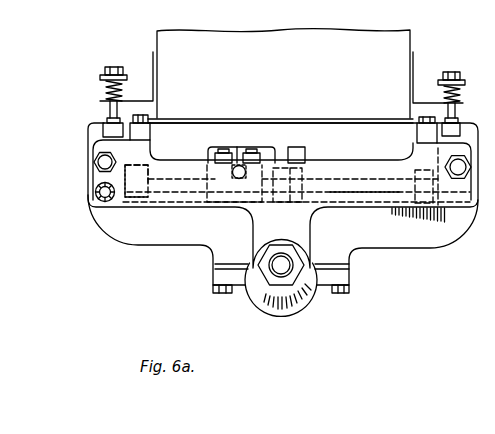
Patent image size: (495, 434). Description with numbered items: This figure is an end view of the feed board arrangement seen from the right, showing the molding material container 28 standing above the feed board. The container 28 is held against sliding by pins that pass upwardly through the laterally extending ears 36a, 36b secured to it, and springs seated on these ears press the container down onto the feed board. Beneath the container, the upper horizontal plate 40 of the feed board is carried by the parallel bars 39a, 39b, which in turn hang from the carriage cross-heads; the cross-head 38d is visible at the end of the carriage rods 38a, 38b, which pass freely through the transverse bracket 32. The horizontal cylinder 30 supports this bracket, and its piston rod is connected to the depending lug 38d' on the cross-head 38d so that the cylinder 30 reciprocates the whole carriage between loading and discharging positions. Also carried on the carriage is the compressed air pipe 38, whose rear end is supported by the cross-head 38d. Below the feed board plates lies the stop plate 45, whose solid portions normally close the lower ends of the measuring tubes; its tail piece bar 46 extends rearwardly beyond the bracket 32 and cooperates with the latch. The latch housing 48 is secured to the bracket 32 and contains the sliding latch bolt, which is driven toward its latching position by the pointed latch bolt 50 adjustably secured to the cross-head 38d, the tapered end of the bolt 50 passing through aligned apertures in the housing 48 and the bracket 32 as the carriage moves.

The container 28 is at (290, 35).
The horizontal cylinder 30 is at (250, 290).
The transverse bracket 32 is at (184, 245).
The laterally extending ear 36a is at (100, 101).
The laterally extending ear 36b is at (466, 105).
The compressed air pipe 38 is at (92, 196).
The parallel rod 38a is at (96, 161).
The parallel rod 38b is at (471, 167).
The cross-head 38d is at (140, 201).
The depending lug 38d' is at (311, 305).
The parallel bar 39a is at (150, 132).
The parallel bar 39b is at (417, 133).
The upper horizontal plate 40 is at (267, 118).
The stop plate 45 is at (360, 198).
The tail piece bar 46 is at (283, 178).
The latch housing 48 is at (208, 154).
The pointed latch bolt 50 is at (238, 174).